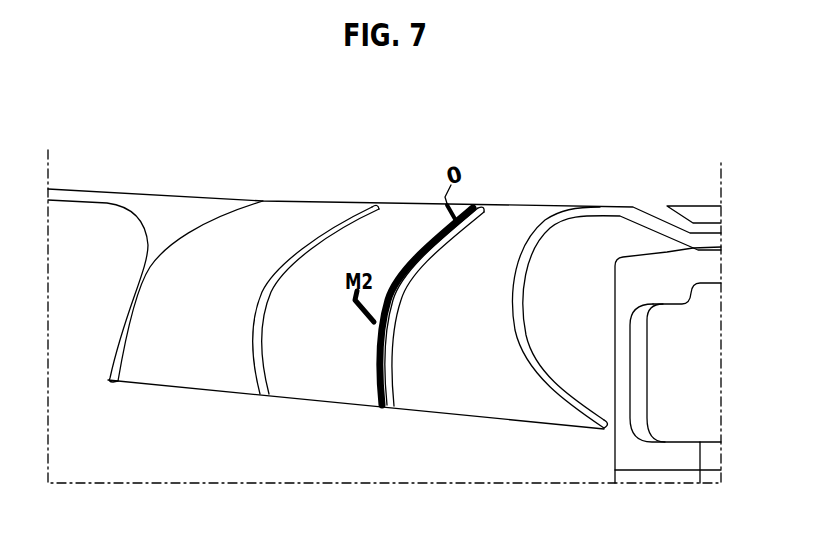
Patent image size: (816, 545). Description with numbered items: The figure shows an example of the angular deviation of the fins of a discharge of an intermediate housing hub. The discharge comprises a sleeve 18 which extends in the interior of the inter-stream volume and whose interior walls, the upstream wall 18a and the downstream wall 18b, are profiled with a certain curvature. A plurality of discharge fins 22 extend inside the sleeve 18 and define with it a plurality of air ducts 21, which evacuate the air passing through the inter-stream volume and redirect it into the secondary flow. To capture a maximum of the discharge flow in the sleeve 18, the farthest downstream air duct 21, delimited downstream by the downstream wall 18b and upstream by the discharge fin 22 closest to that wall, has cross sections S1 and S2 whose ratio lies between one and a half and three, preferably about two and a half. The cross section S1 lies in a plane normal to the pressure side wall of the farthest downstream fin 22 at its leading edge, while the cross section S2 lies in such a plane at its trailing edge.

The sleeve 18 is at (327, 428).
The upstream interior wall 18a is at (127, 323).
The downstream interior wall 18b is at (517, 280).
The air duct 21 is at (223, 306).
The discharge fin 22 is at (282, 277).
The cross section S1 is at (370, 373).
The cross section S2 is at (376, 212).